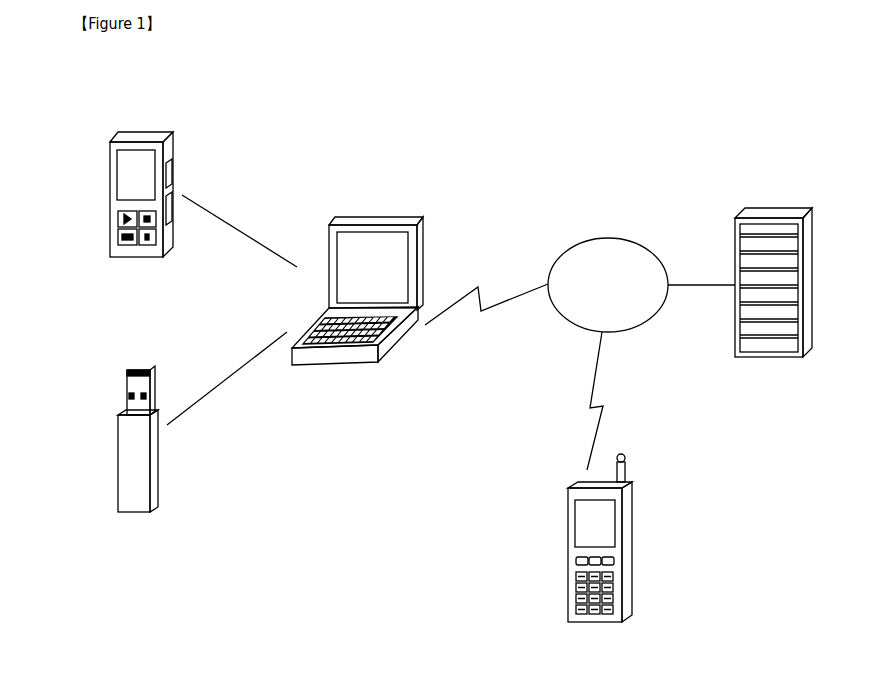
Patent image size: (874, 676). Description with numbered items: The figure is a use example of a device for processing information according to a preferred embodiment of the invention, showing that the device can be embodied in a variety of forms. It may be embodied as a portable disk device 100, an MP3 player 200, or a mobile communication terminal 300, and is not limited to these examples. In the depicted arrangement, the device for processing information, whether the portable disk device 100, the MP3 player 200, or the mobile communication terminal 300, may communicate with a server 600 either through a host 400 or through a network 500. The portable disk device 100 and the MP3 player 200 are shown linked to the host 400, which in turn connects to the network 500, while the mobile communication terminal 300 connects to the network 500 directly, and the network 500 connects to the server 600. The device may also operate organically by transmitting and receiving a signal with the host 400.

The portable disk device 100 is at (153, 502).
The MP3 player 200 is at (175, 133).
The mobile communication terminal 300 is at (632, 531).
The host 400 is at (418, 216).
The network 500 is at (608, 237).
The server 600 is at (812, 292).